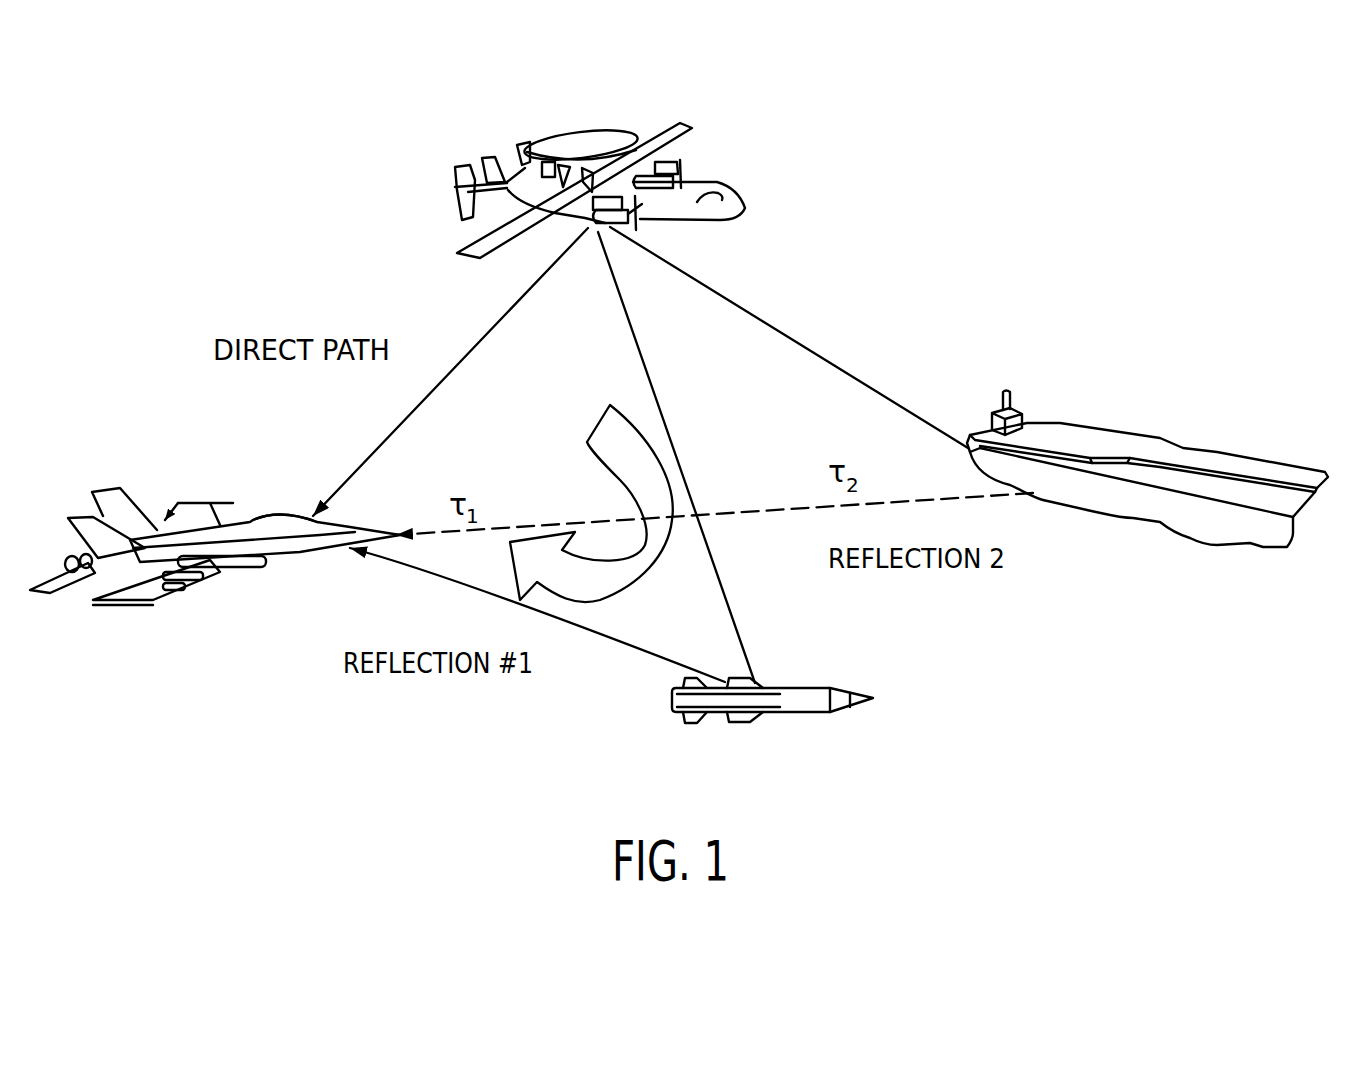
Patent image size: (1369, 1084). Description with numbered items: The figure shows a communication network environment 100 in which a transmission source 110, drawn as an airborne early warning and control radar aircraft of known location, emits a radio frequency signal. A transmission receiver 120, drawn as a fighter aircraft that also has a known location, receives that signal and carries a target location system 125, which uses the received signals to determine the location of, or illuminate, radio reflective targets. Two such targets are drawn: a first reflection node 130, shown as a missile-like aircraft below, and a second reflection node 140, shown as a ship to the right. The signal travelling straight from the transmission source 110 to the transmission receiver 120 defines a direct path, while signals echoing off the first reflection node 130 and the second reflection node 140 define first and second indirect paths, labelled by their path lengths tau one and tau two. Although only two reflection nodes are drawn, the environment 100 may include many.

The communication network environment 100 is at (1040, 200).
The transmission source 110 is at (733, 188).
The transmission receiver 120 is at (137, 503).
The target location system 125 is at (280, 511).
The first reflection node 130 is at (805, 690).
The second reflection node 140 is at (1218, 452).